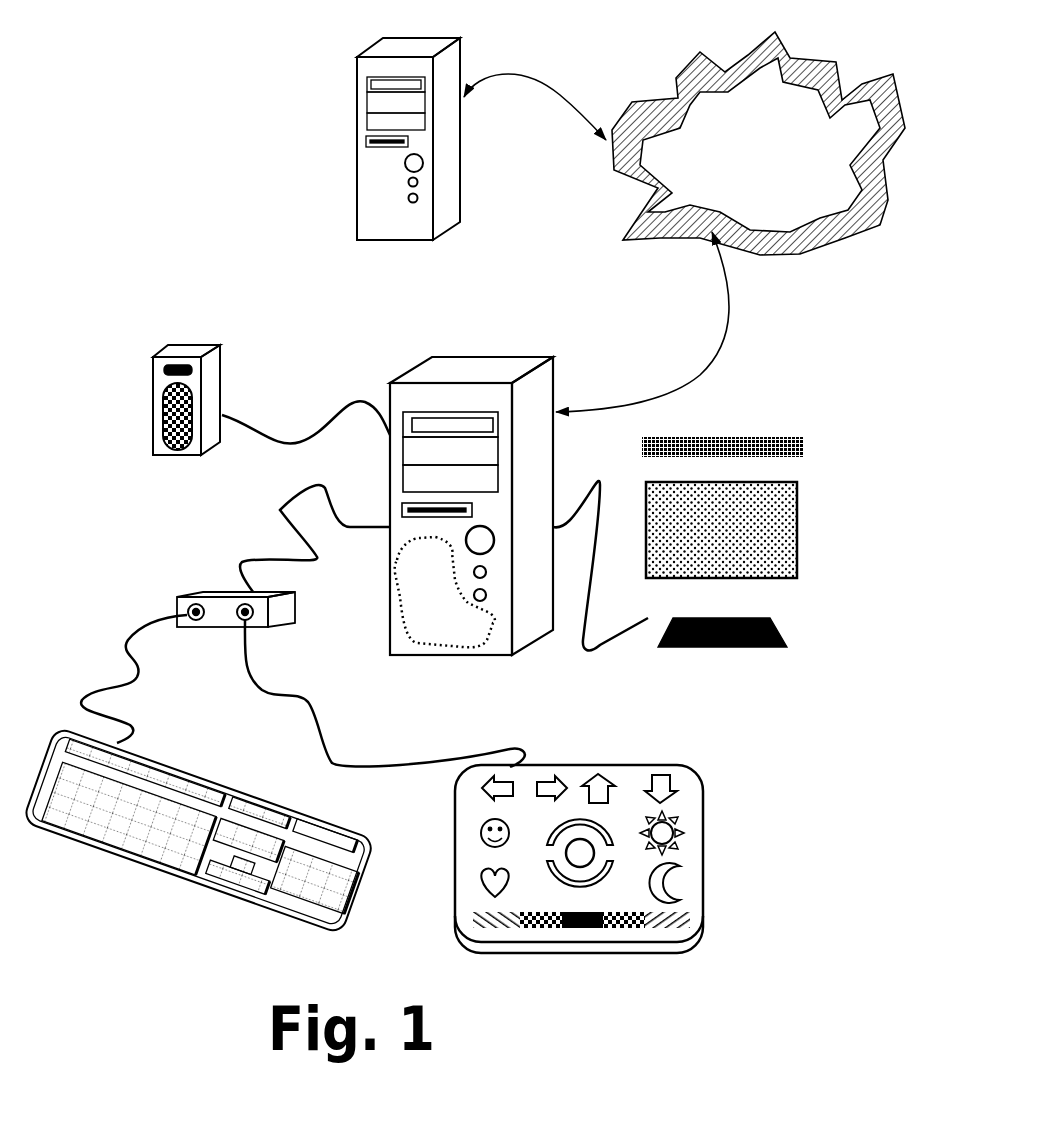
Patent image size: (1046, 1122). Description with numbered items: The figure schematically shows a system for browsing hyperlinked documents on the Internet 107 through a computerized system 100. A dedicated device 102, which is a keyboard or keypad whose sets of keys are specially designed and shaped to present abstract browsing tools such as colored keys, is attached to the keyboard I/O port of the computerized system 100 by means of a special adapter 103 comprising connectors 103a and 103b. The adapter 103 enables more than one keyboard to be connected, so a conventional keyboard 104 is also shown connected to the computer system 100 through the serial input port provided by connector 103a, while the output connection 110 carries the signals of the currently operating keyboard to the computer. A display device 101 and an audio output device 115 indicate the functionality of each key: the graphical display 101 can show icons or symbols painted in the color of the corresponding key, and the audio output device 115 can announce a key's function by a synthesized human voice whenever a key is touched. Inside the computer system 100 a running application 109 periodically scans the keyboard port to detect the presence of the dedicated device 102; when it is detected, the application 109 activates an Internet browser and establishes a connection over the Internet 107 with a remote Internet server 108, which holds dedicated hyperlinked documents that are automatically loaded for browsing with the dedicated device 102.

The computerized system 100 is at (427, 524).
The display device 101 is at (755, 436).
The dedicated device 102 is at (633, 765).
The adapter 103 is at (219, 637).
The connector 103a is at (188, 602).
The connector 103b is at (235, 620).
The conventional keyboard 104 is at (142, 872).
The Internet 107 is at (845, 256).
The Internet server 108 is at (357, 193).
The running application 109 is at (490, 641).
The output connection 110 is at (277, 508).
The audio output device 115 is at (185, 343).